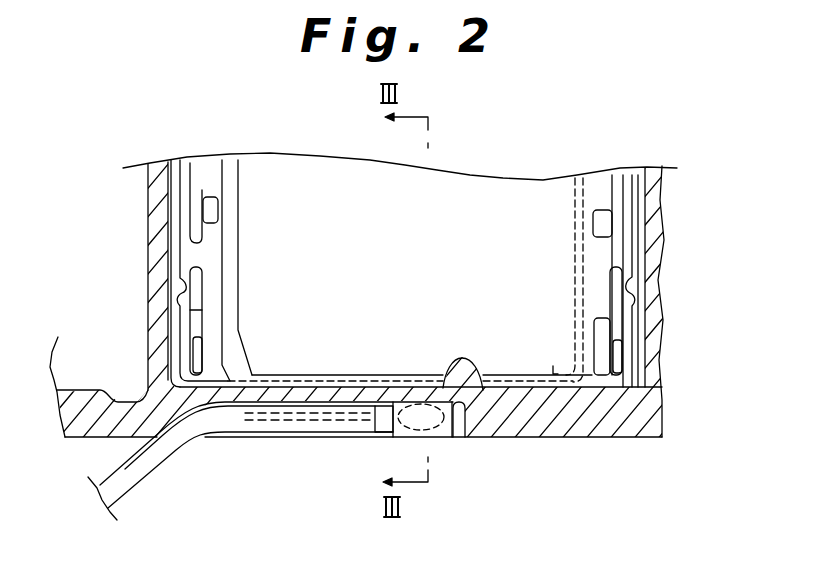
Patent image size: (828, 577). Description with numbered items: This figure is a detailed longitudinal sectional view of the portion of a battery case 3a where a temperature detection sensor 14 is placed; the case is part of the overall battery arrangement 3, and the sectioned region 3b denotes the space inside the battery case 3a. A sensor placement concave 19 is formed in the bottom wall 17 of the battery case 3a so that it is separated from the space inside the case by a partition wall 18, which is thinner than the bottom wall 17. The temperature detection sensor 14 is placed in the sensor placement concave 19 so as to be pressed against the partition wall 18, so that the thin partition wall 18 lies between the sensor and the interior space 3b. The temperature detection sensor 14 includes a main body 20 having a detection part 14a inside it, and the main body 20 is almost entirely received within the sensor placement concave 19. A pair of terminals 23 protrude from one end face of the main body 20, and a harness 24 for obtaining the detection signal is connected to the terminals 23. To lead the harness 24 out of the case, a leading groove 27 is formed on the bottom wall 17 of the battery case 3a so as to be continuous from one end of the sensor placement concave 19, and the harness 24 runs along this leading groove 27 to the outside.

The container 3 is at (514, 172).
The battery case 3a is at (203, 172).
The bottom wall 3b is at (408, 276).
The temperature detection sensor 14 is at (400, 440).
The detection part 14a is at (383, 436).
The bottom wall 17 is at (547, 418).
The partition wall 18 is at (483, 395).
The sensor placement concave 19 is at (454, 438).
The main body 20 is at (438, 438).
The terminals 23 is at (305, 425).
The harness 24 is at (155, 458).
The leading groove 27 is at (203, 408).